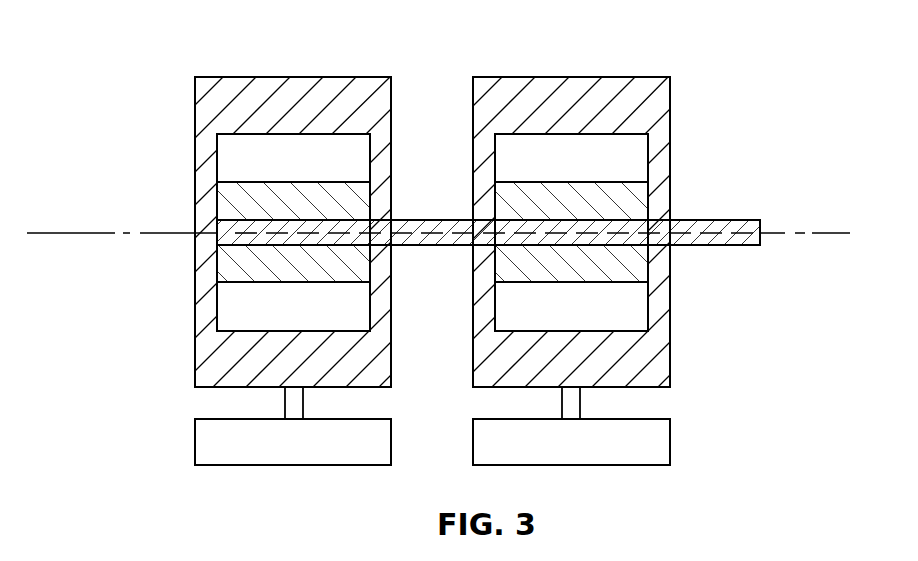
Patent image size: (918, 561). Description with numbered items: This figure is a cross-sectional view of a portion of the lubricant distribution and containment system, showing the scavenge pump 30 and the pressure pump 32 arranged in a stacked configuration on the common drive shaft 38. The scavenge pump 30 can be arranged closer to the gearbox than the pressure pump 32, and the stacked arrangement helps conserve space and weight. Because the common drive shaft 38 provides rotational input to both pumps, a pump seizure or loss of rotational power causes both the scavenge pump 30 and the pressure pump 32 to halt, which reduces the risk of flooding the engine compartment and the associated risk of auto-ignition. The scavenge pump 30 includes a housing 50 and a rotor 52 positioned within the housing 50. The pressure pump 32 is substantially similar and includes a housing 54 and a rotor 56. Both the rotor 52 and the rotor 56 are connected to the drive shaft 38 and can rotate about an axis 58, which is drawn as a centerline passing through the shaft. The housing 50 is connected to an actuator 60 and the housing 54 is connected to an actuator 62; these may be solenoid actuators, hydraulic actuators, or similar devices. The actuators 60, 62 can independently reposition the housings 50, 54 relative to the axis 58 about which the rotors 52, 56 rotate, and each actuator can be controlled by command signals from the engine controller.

The scavenge pump 30 is at (595, 210).
The pressure pump 32 is at (269, 210).
The common drive shaft 38 is at (716, 220).
The housing 50 is at (658, 102).
The rotor 52 is at (638, 268).
The housing 54 is at (208, 113).
The rotor 56 is at (228, 267).
The axis 58 is at (72, 232).
The actuator 60 is at (672, 442).
The actuator 62 is at (195, 441).